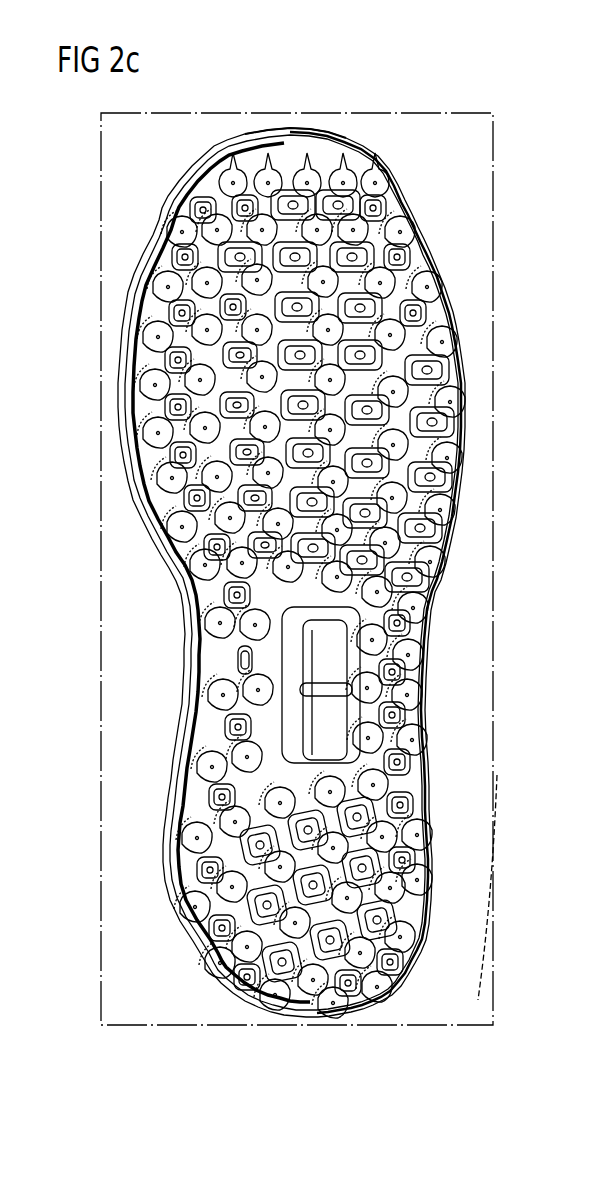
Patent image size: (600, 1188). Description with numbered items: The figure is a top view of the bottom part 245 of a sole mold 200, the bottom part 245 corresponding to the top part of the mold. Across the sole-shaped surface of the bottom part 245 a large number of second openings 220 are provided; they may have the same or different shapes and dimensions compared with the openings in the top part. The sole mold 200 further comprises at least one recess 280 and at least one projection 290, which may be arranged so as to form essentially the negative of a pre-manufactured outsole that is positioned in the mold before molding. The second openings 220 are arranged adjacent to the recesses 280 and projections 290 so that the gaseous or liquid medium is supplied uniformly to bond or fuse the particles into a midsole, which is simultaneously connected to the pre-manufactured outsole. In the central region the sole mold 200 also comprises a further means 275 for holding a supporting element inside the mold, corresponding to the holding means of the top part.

The sole mold 200 is at (124, 218).
The second openings 220 is at (205, 195).
The bottom part 245 is at (289, 150).
The further means for holding a supporting element 275 is at (333, 666).
The recess 280 is at (180, 538).
The projection 290 is at (458, 337).